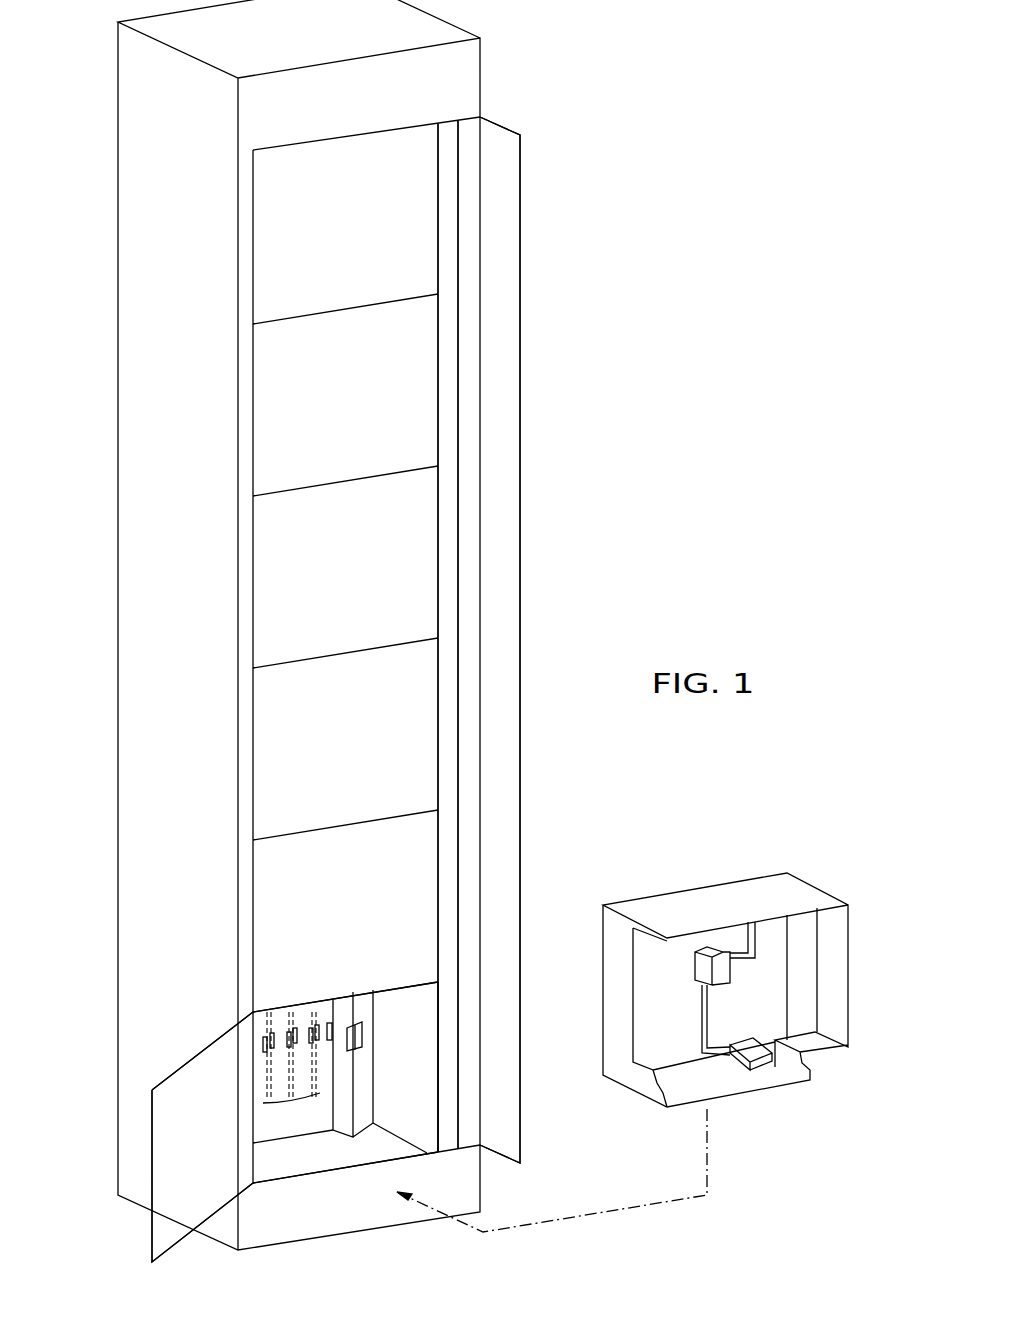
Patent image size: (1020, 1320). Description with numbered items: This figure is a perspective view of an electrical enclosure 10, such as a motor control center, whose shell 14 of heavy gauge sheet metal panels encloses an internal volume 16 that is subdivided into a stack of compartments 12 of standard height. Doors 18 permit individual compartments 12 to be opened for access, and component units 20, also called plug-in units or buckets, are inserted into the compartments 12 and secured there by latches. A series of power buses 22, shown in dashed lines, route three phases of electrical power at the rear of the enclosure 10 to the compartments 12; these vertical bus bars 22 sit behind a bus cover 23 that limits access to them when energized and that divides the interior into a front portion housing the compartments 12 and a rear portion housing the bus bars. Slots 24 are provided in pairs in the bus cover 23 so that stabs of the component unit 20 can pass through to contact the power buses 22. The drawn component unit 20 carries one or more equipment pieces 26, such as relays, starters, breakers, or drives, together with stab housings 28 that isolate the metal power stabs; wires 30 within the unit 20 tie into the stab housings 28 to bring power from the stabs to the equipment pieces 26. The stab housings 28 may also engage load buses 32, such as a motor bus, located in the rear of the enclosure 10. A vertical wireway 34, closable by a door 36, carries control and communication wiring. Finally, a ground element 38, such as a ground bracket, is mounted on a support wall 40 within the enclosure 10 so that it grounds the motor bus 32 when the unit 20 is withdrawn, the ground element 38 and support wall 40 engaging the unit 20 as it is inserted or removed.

The electrical enclosure 10 is at (620, 168).
The compartments 12 is at (347, 1150).
The shell 14 is at (157, 262).
The internal volume 16 is at (418, 1018).
The doors 18 is at (336, 209).
The component unit 20 is at (793, 840).
The power buses 22 is at (315, 1072).
The bus cover 23 is at (277, 1117).
The slots 24 is at (260, 1045).
The equipment pieces 26 is at (767, 1065).
The stab housings 28 is at (695, 963).
The wires 30 is at (743, 937).
The load buses 32 is at (330, 1027).
The vertical wireway 34 is at (445, 1075).
The door 36 is at (503, 1123).
The ground element 38 is at (357, 1033).
The support wall 40 is at (342, 1090).